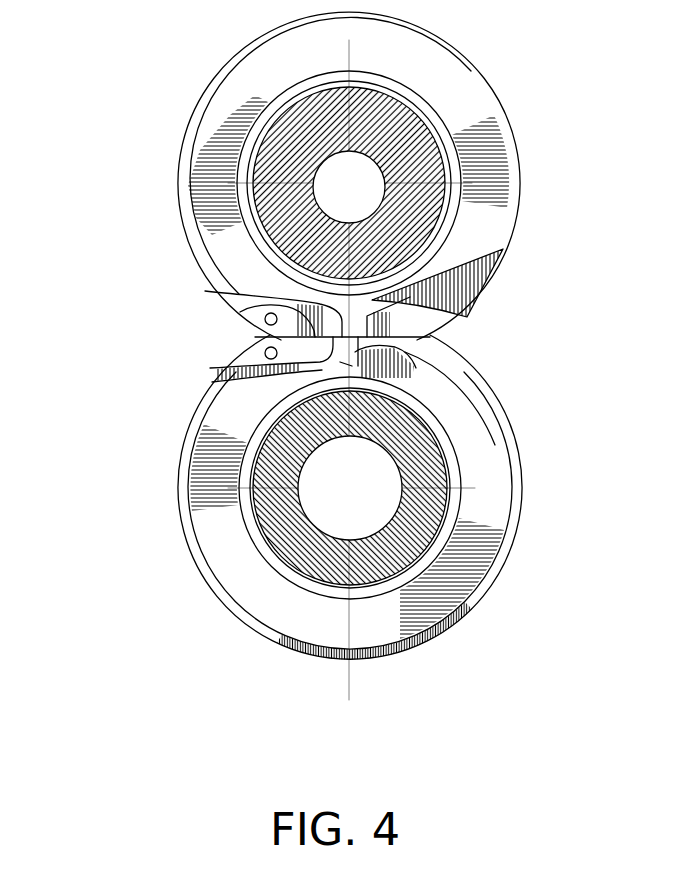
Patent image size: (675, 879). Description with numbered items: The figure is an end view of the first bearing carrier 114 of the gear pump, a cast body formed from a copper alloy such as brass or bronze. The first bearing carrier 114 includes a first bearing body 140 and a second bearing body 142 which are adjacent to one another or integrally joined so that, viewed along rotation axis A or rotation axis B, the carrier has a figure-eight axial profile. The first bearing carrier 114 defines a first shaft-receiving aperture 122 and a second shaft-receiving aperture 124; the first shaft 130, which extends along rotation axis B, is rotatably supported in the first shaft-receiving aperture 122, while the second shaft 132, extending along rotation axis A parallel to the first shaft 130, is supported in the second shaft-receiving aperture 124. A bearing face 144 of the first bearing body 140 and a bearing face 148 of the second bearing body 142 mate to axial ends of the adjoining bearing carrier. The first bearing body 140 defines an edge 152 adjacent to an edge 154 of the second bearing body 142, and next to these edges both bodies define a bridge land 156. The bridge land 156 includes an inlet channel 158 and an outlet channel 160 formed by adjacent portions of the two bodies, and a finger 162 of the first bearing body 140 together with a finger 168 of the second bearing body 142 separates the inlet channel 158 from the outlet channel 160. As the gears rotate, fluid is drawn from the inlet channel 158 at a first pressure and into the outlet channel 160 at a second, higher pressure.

The first bearing carrier 114 is at (236, 674).
The first shaft-receiving aperture 122 is at (242, 133).
The second shaft-receiving aperture 124 is at (240, 446).
The first shaft 130 is at (433, 135).
The second shaft 132 is at (440, 527).
The first bearing body 140 is at (143, 218).
The second bearing body 142 is at (155, 549).
The bearing face 144 is at (493, 220).
The bearing face 148 is at (477, 452).
The edge 152 is at (262, 316).
The edge 154 is at (237, 378).
The bridge land 156 is at (437, 333).
The inlet channel 158 is at (280, 338).
The outlet channel 160 is at (423, 336).
The finger 162 is at (433, 337).
The finger 168 is at (348, 367).
The second rotation axis A is at (349, 485).
The first rotation axis B is at (349, 185).